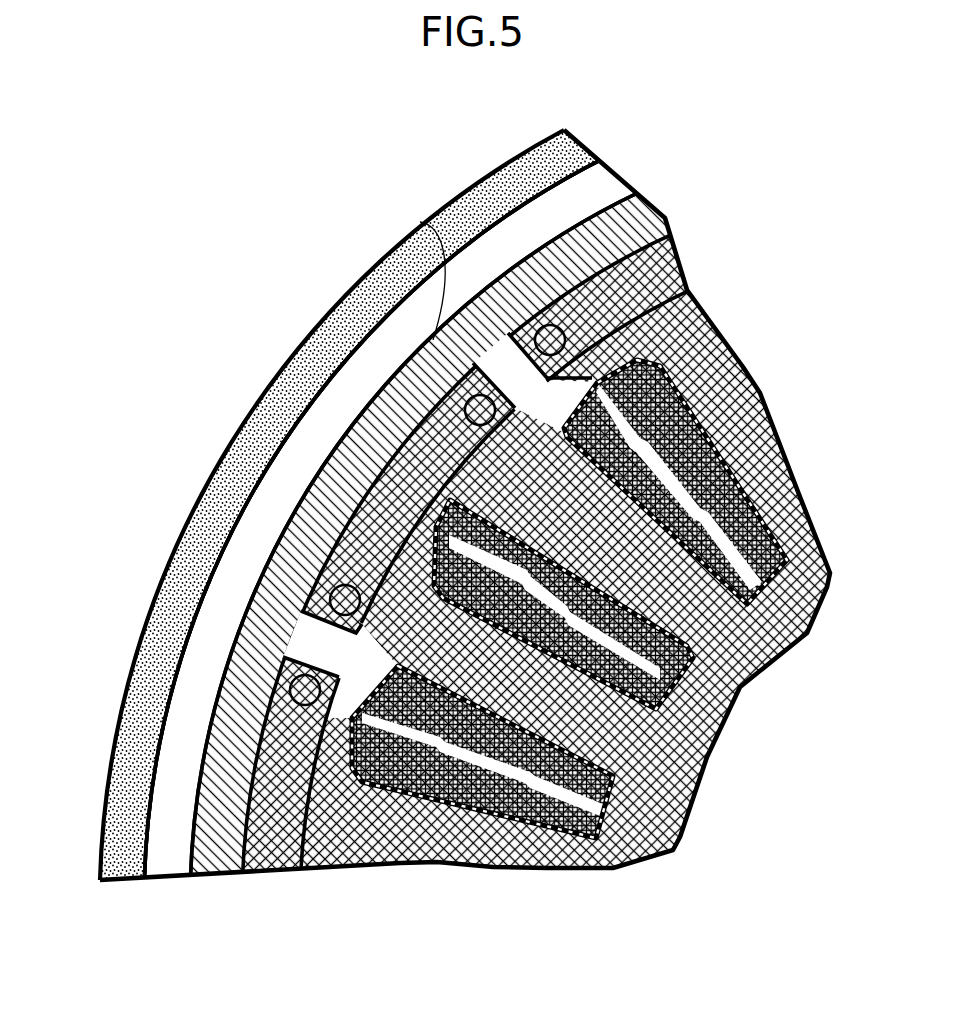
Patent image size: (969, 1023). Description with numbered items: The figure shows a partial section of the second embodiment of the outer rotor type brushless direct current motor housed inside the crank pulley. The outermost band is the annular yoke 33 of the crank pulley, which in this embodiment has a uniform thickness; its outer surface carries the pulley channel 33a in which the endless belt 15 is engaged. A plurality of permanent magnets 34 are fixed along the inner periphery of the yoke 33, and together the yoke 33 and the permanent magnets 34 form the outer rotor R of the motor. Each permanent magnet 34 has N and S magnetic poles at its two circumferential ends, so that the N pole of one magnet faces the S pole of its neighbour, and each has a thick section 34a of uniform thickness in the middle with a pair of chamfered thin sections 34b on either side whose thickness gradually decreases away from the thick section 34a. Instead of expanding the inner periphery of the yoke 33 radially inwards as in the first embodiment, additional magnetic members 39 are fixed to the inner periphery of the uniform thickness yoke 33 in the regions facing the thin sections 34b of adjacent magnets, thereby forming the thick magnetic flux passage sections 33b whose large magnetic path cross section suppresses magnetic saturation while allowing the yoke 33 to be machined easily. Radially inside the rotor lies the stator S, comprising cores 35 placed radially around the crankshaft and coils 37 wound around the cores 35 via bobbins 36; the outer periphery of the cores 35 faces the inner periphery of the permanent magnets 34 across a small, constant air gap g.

The endless belt 15 is at (481, 222).
The yoke 33 is at (428, 336).
The pulley channel 33a is at (195, 735).
The magnetic flux passage section 33b is at (470, 300).
The permanent magnet 34 is at (278, 836).
The thick section 34a is at (340, 478).
The thin section 34b is at (528, 337).
The core 35 is at (398, 846).
The bobbin 36 is at (452, 803).
The coil 37 is at (523, 800).
The additional magnetic member 39 is at (318, 640).
The outer rotor R is at (293, 510).
The stator S is at (772, 398).
The air gap g is at (318, 540).